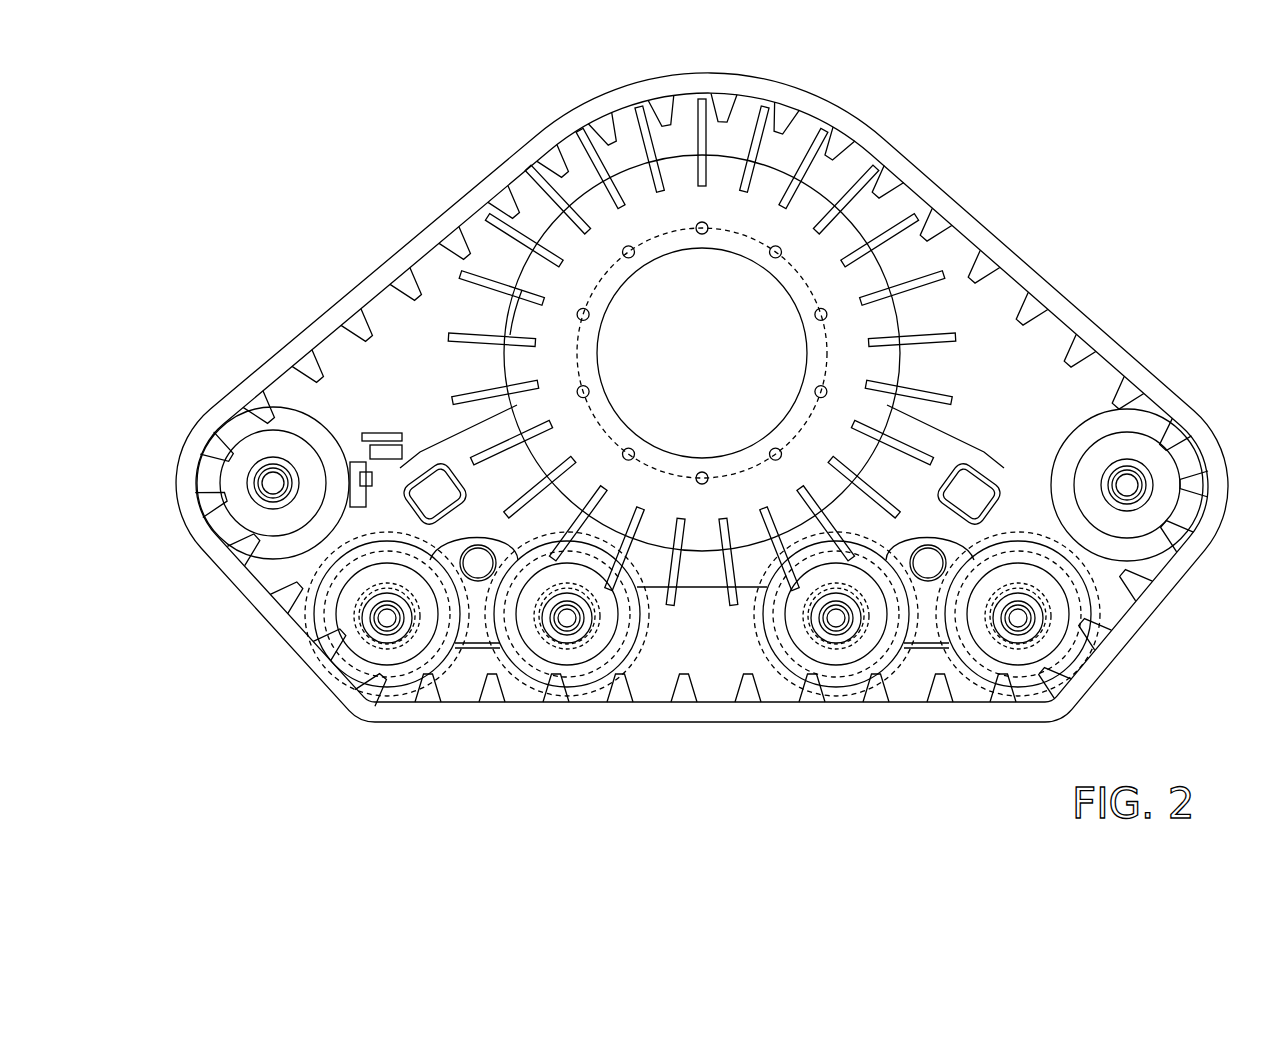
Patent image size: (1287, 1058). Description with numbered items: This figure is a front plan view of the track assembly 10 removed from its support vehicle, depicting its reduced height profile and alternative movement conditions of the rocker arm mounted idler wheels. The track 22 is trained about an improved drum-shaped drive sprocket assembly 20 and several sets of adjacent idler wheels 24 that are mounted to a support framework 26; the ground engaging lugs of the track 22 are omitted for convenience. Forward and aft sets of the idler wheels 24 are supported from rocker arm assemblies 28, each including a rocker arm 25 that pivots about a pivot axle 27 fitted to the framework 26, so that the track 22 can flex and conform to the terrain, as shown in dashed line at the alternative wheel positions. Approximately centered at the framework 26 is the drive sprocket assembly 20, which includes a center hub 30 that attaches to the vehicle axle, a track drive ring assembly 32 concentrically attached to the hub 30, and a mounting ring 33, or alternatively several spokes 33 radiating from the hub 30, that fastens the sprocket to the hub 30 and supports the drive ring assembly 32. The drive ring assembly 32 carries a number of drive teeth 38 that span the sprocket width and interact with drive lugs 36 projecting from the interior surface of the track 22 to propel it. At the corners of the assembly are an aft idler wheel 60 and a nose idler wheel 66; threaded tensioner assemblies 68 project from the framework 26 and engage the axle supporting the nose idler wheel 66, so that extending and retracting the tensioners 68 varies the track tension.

The track assembly 10 is at (1084, 227).
The drive sprocket assembly 20 is at (522, 263).
The track 22 is at (287, 663).
The idler wheels 24 is at (578, 690).
The rocker arm 25 is at (503, 540).
The support framework 26 is at (959, 432).
The pivot axle 27 is at (478, 546).
The rocker arm assemblies 28 is at (482, 648).
The center hub 30 is at (688, 366).
The track drive ring assembly 32 is at (504, 372).
The mounting ring 33 is at (512, 316).
The drive lugs 36 is at (925, 223).
The drive teeth 38 is at (772, 99).
The aft idler wheel 60 is at (1143, 419).
The nose idler wheel 66 is at (230, 540).
The threaded tensioner assemblies 68 is at (362, 438).